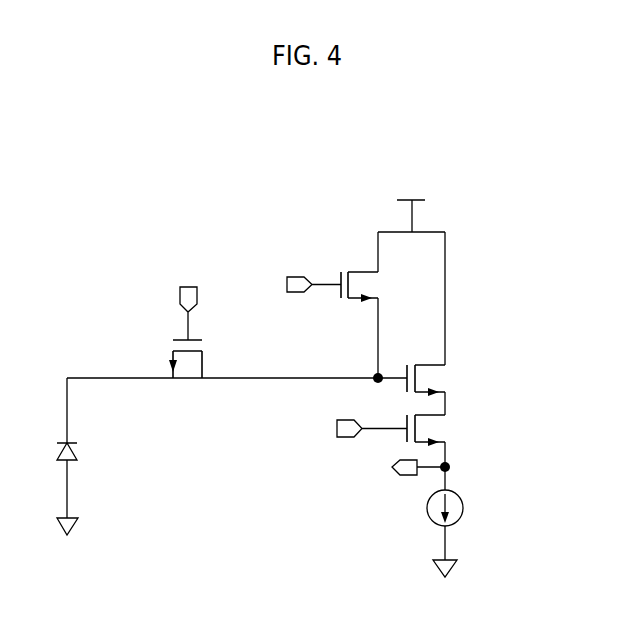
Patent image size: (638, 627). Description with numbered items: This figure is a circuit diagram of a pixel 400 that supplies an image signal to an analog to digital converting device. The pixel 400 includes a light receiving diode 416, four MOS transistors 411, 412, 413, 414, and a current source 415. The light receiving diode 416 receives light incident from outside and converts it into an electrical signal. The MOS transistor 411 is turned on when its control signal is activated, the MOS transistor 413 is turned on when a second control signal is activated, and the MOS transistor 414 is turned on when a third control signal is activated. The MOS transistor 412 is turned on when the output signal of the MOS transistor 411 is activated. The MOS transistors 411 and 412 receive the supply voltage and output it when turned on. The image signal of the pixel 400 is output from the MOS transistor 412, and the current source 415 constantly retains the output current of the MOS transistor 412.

The pixel 400 is at (497, 196).
The MOS transistor 411 is at (373, 283).
The MOS transistor 412 is at (438, 378).
The MOS transistor 413 is at (438, 428).
The MOS transistor 414 is at (190, 377).
The current source 415 is at (463, 508).
The light receiving diode 416 is at (77, 452).